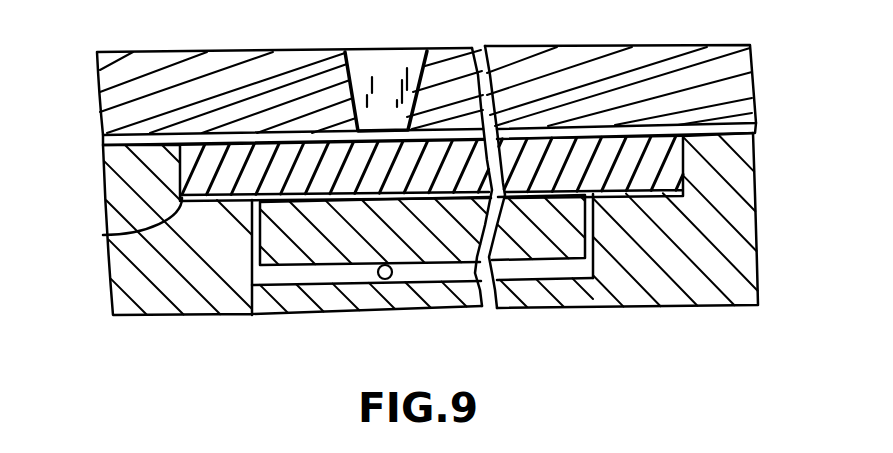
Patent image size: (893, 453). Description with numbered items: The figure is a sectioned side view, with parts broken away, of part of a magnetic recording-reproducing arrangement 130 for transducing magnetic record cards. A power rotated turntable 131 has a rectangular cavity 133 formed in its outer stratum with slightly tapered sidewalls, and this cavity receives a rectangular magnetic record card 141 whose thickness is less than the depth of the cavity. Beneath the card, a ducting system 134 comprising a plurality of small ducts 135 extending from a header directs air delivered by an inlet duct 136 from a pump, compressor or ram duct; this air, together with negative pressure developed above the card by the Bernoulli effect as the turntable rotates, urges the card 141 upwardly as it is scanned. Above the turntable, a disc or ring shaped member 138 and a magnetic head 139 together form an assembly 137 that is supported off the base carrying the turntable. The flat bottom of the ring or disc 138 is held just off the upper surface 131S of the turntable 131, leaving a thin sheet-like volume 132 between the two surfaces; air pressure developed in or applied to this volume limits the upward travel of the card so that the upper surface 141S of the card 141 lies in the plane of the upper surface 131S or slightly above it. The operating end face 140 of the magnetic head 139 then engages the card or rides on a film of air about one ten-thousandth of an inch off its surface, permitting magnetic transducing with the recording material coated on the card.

The magnetic recording-reproducing arrangement 130 is at (109, 47).
The turntable 131 is at (104, 190).
The upper surface of the turntable 131S is at (752, 130).
The thin sheet-like volume 132 is at (105, 143).
The rectangular cavity 133 is at (108, 237).
The ducting system 134 is at (532, 266).
The small ducts 135 is at (252, 315).
The inlet duct 136 is at (385, 280).
The assembly 137 is at (97, 93).
The disc or ring shaped member 138 is at (644, 57).
The magnetic head 139 is at (382, 52).
The operating end face of the head 140 is at (386, 130).
The magnetic record card 141 is at (670, 172).
The upper surface of the card 141S is at (660, 132).